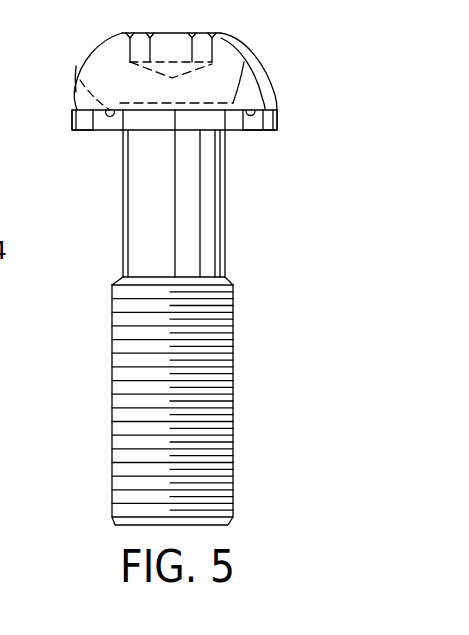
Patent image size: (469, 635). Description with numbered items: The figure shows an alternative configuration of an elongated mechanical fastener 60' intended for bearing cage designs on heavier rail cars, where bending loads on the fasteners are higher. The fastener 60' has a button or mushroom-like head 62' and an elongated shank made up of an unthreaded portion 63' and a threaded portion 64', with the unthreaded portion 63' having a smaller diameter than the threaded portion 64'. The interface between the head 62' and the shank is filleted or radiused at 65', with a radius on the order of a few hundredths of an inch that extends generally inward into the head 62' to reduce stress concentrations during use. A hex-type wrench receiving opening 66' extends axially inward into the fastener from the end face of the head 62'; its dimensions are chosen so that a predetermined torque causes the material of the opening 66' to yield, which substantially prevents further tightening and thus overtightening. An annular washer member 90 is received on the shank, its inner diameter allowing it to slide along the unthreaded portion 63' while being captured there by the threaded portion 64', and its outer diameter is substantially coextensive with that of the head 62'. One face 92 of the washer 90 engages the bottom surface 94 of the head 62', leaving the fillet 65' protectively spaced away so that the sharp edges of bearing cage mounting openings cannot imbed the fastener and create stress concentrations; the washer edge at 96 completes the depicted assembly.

The fastener 60' is at (165, 262).
The head 62' is at (200, 63).
The unthreaded portion 63' is at (219, 207).
The threaded portion 64' is at (219, 405).
The fillet 65' is at (65, 56).
The hex-type wrench receiving opening 66' is at (192, 39).
The annular washer member 90 is at (72, 127).
The washer face 92 is at (85, 112).
The bottom surface 94 is at (252, 108).
The washer right edge 96 is at (258, 131).